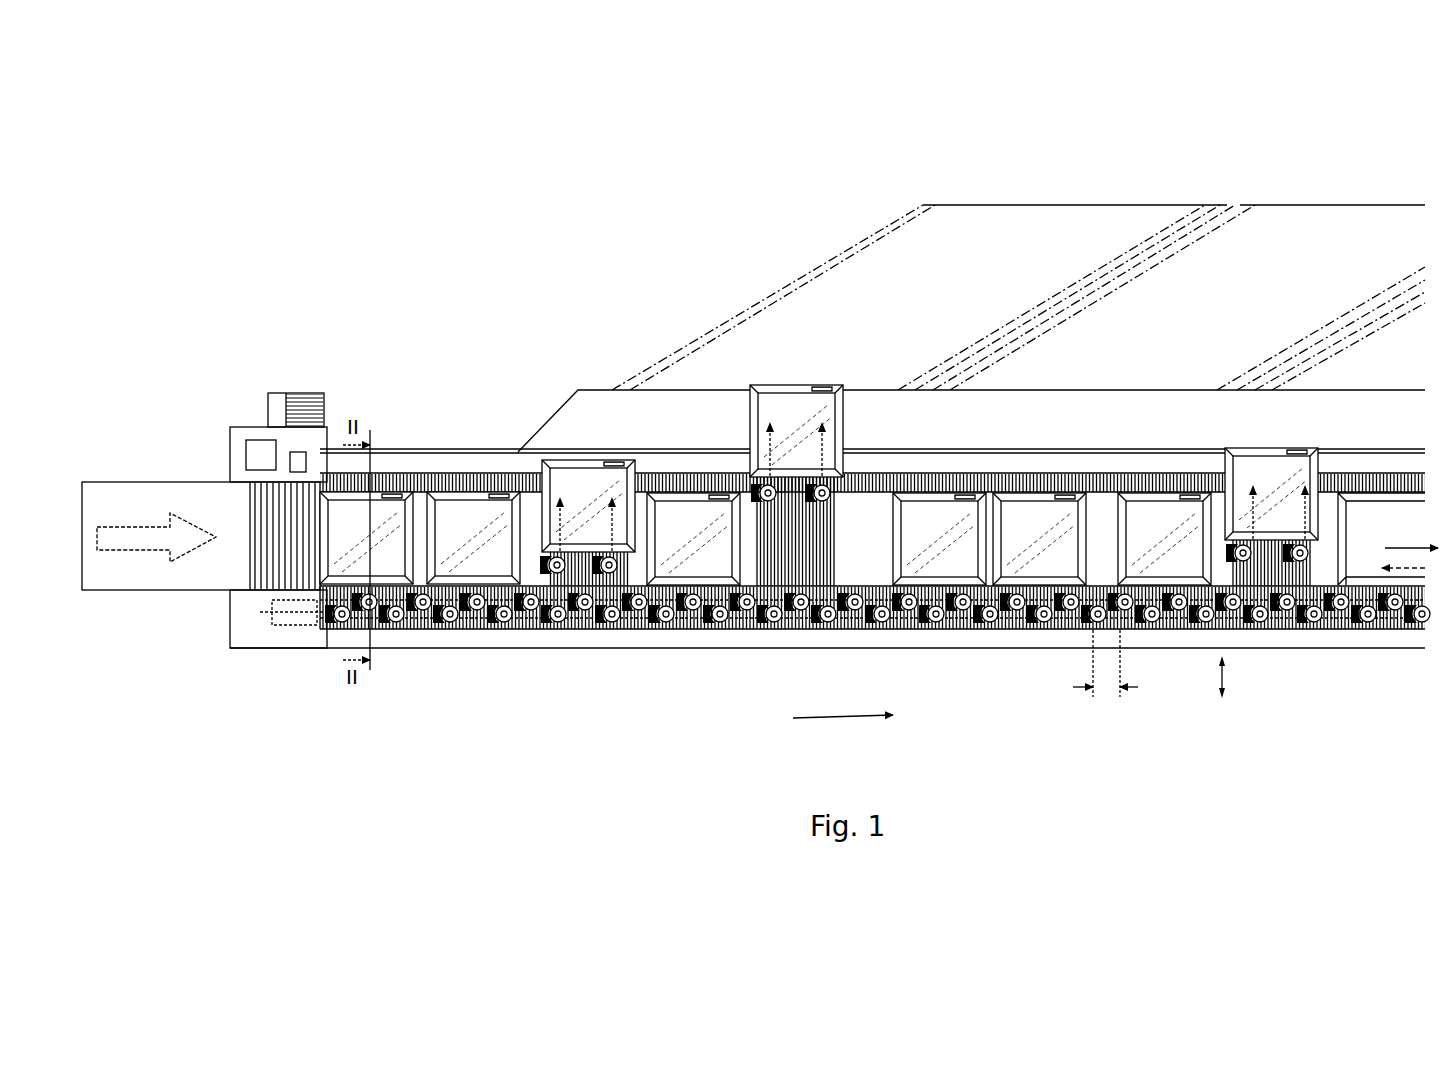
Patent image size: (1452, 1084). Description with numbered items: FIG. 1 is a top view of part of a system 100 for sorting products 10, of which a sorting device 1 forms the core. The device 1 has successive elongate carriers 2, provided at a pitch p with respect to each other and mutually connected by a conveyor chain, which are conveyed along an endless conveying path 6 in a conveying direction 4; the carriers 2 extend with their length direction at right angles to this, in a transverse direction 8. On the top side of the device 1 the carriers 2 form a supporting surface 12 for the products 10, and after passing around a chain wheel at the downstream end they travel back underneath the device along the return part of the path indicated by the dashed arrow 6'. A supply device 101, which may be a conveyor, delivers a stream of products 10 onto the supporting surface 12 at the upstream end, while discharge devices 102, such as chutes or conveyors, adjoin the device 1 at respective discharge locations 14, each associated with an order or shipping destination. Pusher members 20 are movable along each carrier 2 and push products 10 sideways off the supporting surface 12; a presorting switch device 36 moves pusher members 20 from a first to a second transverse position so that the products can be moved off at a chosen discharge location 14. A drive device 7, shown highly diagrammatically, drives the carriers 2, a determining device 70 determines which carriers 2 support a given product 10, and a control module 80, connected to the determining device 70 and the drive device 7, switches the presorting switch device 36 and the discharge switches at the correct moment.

The system 100 is at (444, 265).
The sorting device 1 is at (457, 410).
The drive device 7 is at (302, 388).
The control module 80 is at (255, 440).
The determining device 70 is at (308, 443).
The supply device 101 is at (237, 516).
The products 10 is at (362, 546).
The discharge locations 14 is at (718, 378).
The discharge devices 102 is at (975, 287).
The carriers 2 is at (556, 640).
The pusher members 20 is at (417, 626).
The presorting switch device 36 is at (358, 632).
The conveying direction 4 is at (840, 718).
The pitch p is at (1080, 690).
The transverse direction 8 is at (1228, 677).
The supporting surface 12 is at (1298, 592).
The endless conveying path 6 is at (1416, 524).
The return part of the conveying path 6' is at (1416, 587).